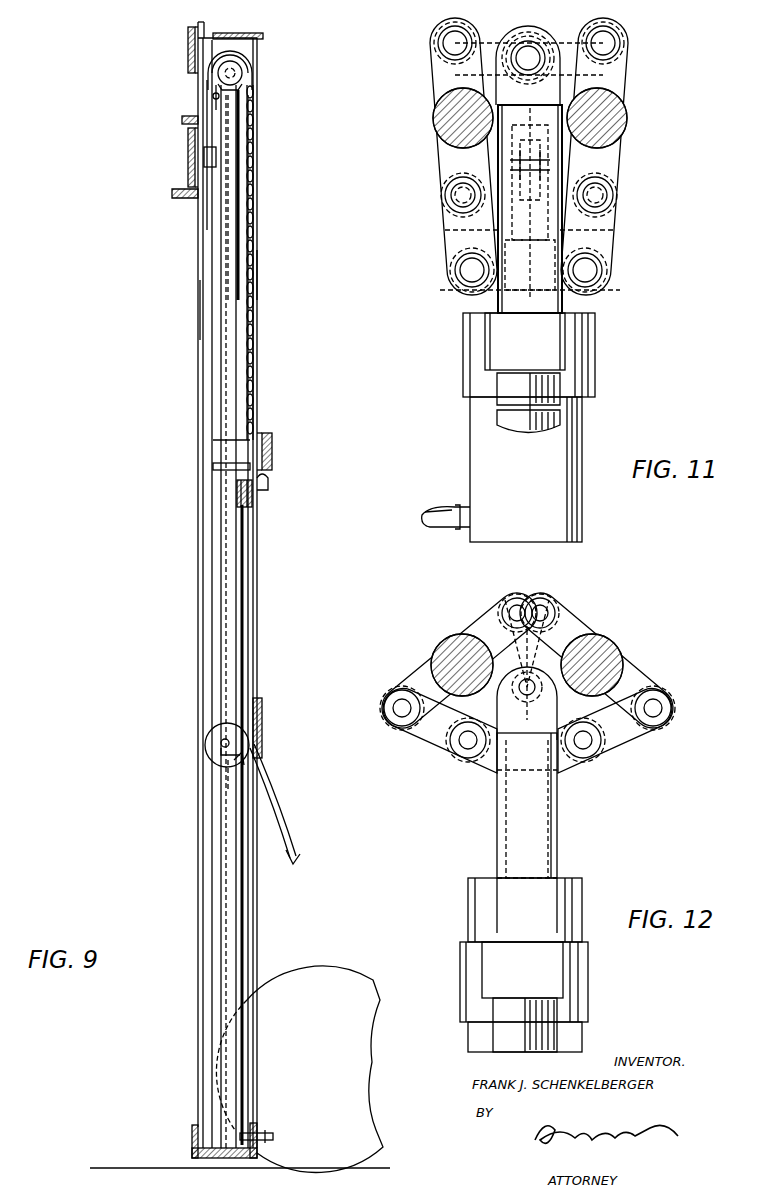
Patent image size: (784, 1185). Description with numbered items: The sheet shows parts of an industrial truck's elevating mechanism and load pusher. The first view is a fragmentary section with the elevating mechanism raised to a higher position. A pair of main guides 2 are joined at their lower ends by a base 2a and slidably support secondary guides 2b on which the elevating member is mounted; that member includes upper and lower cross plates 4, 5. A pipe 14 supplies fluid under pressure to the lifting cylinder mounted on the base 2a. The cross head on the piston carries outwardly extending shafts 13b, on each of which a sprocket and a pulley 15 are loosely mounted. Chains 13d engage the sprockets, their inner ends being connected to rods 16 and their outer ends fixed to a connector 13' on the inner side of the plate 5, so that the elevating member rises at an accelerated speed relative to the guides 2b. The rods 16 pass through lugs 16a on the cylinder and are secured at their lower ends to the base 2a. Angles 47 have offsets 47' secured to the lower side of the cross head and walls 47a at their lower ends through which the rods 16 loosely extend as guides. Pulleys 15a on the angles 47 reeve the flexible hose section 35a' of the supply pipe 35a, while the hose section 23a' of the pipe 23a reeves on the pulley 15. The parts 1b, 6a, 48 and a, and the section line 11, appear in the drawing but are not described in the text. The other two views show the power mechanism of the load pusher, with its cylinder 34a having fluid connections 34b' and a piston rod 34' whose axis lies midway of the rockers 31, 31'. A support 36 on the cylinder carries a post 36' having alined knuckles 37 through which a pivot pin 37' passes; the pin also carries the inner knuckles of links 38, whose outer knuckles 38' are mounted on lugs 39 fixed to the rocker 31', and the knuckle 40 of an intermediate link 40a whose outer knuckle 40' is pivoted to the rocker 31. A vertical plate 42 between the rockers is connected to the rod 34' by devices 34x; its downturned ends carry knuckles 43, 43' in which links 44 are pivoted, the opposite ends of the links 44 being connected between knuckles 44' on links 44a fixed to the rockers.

In FIG. 9, the wheel 1b is at (340, 978).
In FIG. 9, the main guides 2 is at (250, 937).
In FIG. 9, the base 2a is at (205, 1152).
In FIG. 9, the secondary guides 2b is at (248, 50).
In FIG. 9, the upper cross plate 4 is at (190, 50).
In FIG. 9, the lower cross plate 5 is at (188, 145).
In FIG. 9, the bracket ledge 6a is at (180, 200).
In FIG. 9, the mast channel 11 is at (212, 915).
In FIG. 9, the connector 13' is at (172, 162).
In FIG. 9, the shafts 13b is at (220, 80).
In FIG. 9, the chains 13d is at (255, 229).
In FIG. 9, the pipe 14 is at (272, 1133).
In FIG. 9, the pulley 15 is at (250, 78).
In FIG. 9, the pulleys 15a is at (232, 757).
In FIG. 9, the rods 16 is at (240, 480).
In FIG. 9, the lugs 16a is at (252, 500).
In FIG. 9, the fluid flow pipe 23a is at (283, 781).
In FIG. 9, the hose section 23a' is at (284, 275).
In FIG. 9, the fluid supply pipe 35a is at (174, 310).
In FIG. 9, the hose section 35a' is at (286, 825).
In FIG. 9, the angles 47 is at (268, 195).
In FIG. 9, the offsets 47' is at (268, 197).
In FIG. 9, the walls 47a is at (228, 772).
In FIG. 9, the pulley pin 48 is at (222, 740).
In FIG. 9, the stop a is at (215, 465).
In FIG. 11, the rocker 31 is at (446, 124).
In FIG. 12, the rocker 31 is at (451, 659).
In FIG. 11, the rocker 31' is at (620, 121).
In FIG. 12, the rocker 31' is at (608, 655).
In FIG. 11, the piston rod 34' is at (530, 201).
In FIG. 12, the piston rod 34' is at (498, 805).
In FIG. 11, the cylinder 34a is at (570, 508).
In FIG. 11, the connections 34b' is at (441, 501).
In FIG. 11, the devices 34x is at (508, 162).
In FIG. 11, the support 36 is at (554, 355).
In FIG. 12, the support 36 is at (551, 997).
In FIG. 11, the post 36' is at (483, 358).
In FIG. 12, the post 36' is at (542, 879).
In FIG. 11, the knuckles 37 is at (535, 55).
In FIG. 12, the pivot pin 37' is at (527, 670).
In FIG. 11, the links 38 is at (518, 151).
In FIG. 11, the knuckles 38' is at (611, 154).
In FIG. 11, the lugs 39 is at (580, 76).
In FIG. 12, the lugs 39 is at (480, 615).
In FIG. 11, the knuckle 40 is at (528, 44).
In FIG. 11, the knuckle 40' is at (435, 43).
In FIG. 11, the intermediate link 40a is at (493, 33).
In FIG. 11, the plate 42 is at (520, 150).
In FIG. 12, the knuckles 43 is at (603, 753).
In FIG. 11, the knuckles 43' is at (533, 276).
In FIG. 12, the knuckles 43' is at (462, 758).
In FIG. 11, the links 44 is at (537, 231).
In FIG. 12, the links 44 is at (531, 731).
In FIG. 11, the knuckles 44' is at (534, 198).
In FIG. 12, the knuckles 44' is at (526, 705).
In FIG. 11, the link 44a is at (440, 168).
In FIG. 12, the link 44a is at (412, 682).